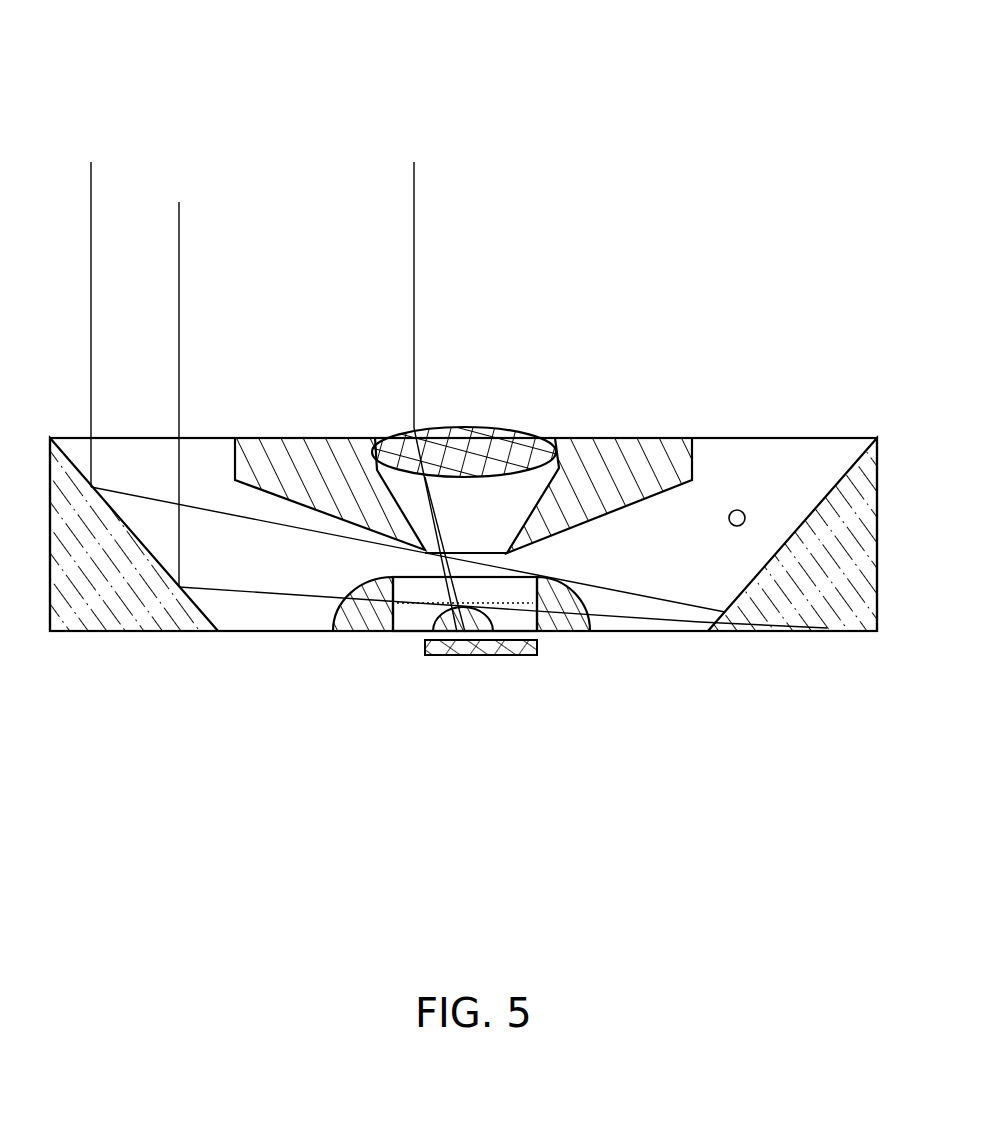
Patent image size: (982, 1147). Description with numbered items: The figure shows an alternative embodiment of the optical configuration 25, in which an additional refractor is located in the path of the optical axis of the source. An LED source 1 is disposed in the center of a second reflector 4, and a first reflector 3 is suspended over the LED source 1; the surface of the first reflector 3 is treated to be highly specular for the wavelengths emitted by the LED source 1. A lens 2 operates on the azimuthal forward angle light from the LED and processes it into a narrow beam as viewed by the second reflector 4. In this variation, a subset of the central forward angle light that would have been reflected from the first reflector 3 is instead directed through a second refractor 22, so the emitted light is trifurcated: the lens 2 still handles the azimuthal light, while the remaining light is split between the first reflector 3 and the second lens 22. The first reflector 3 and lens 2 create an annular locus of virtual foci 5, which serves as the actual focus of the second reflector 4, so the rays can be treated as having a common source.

The optical configuration 25 is at (713, 197).
The second refractor 22 is at (527, 430).
The first reflector 3 is at (690, 455).
The second reflector 4 is at (62, 633).
The annular locus of virtual foci 5 is at (830, 633).
The lens 2 is at (573, 633).
The LED source 1 is at (425, 637).